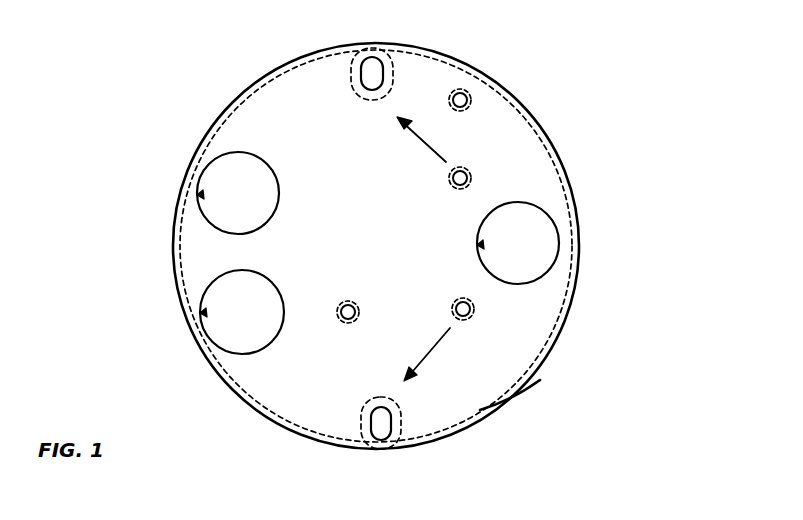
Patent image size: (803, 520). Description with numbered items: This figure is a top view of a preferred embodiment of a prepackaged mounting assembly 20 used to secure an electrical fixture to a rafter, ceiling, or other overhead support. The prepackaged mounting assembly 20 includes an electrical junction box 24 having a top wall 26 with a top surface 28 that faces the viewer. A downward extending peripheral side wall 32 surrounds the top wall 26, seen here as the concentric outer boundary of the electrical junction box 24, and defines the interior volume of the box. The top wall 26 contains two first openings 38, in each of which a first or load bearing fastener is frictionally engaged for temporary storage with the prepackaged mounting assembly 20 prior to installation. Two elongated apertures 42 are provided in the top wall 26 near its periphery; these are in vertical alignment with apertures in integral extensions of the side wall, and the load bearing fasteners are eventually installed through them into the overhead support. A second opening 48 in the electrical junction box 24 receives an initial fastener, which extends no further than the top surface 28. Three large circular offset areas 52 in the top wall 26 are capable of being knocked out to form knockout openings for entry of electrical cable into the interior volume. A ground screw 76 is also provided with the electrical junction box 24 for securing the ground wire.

The prepackaged mounting assembly 20 is at (176, 120).
The electrical junction box 24 is at (440, 52).
The top wall 26 is at (487, 388).
The top surface 28 is at (375, 150).
The peripheral side wall 32 is at (561, 165).
The first opening 38 is at (451, 188).
The aperture 42 is at (372, 58).
The second opening 48 is at (342, 322).
The offset area 52 is at (378, 253).
The ground screw 76 is at (462, 100).